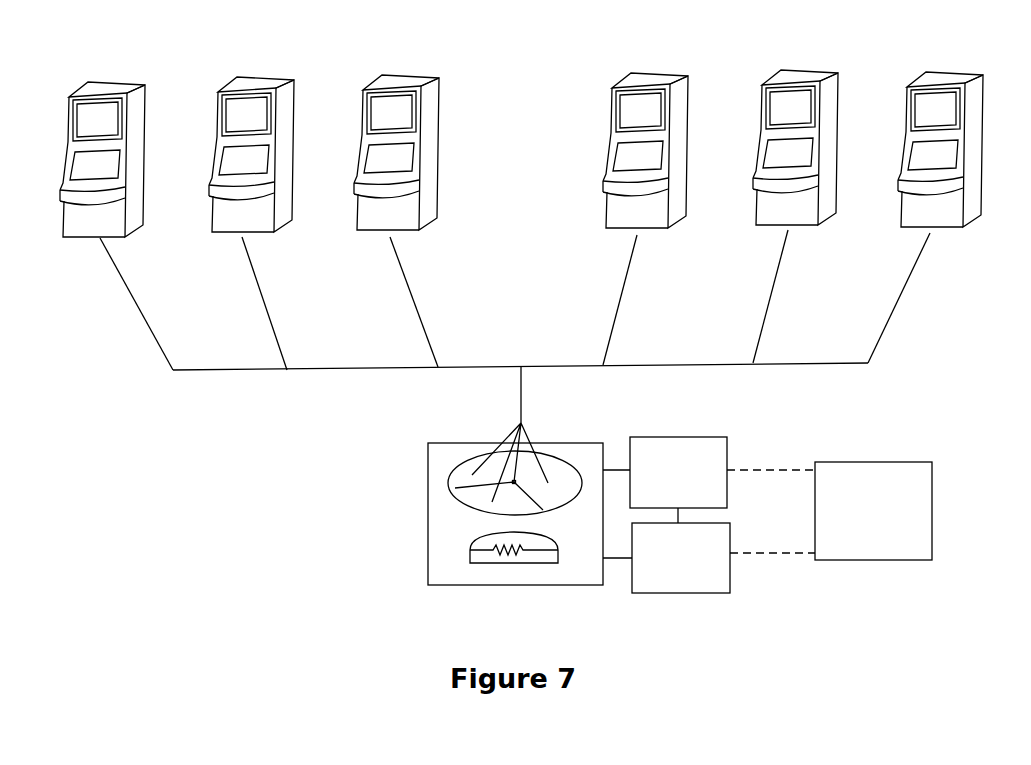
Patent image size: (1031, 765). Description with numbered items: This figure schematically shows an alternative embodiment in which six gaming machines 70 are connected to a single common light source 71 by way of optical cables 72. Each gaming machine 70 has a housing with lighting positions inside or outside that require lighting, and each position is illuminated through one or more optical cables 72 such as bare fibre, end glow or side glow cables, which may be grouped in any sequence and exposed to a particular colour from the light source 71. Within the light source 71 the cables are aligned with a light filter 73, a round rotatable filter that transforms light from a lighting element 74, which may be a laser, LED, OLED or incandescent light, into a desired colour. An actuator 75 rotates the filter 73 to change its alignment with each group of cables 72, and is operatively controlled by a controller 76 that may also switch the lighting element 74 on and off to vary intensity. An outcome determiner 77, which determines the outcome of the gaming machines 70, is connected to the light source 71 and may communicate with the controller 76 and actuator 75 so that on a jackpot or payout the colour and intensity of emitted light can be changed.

The gaming machine 70 is at (123, 80).
The common light source 71 is at (427, 467).
The optical cable 72 is at (130, 297).
The light filter 73 is at (460, 502).
The lighting element 74 is at (472, 557).
The actuator 75 is at (727, 450).
The controller 76 is at (730, 573).
The outcome determiner 77 is at (932, 483).